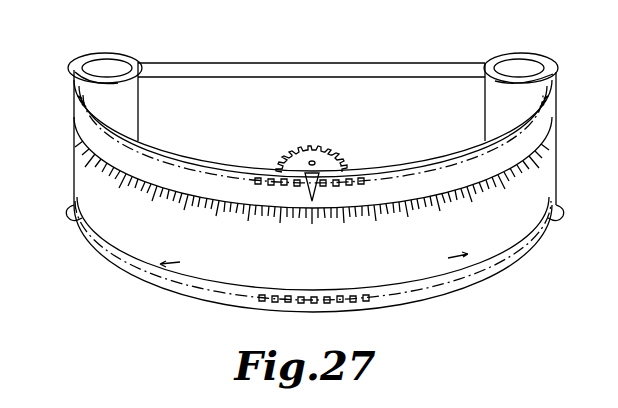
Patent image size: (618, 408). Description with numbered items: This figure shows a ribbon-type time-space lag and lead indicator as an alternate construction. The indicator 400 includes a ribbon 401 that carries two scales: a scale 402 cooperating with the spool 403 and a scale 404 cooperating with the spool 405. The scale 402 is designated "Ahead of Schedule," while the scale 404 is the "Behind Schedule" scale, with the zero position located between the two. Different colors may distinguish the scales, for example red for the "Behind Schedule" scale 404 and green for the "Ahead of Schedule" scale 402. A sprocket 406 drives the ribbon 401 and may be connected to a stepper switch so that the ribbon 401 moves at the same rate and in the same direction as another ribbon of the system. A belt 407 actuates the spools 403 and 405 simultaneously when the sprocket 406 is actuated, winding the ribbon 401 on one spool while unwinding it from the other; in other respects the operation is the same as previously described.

The indicator 400 is at (373, 62).
The ribbon 401 is at (548, 181).
The scale 402 is at (523, 152).
The spool 403 is at (538, 63).
The scale 404 is at (210, 202).
The spool 405 is at (76, 62).
The sprocket 406 is at (326, 148).
The belt 407 is at (461, 63).